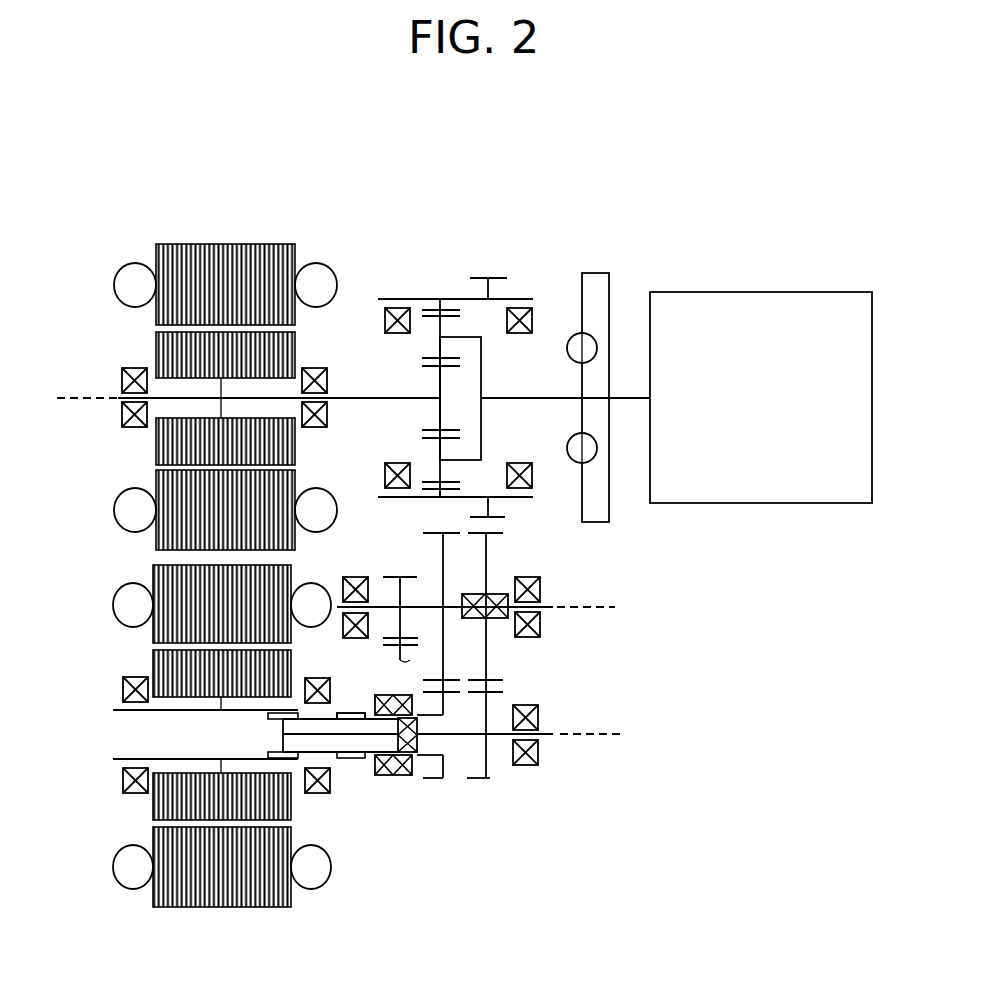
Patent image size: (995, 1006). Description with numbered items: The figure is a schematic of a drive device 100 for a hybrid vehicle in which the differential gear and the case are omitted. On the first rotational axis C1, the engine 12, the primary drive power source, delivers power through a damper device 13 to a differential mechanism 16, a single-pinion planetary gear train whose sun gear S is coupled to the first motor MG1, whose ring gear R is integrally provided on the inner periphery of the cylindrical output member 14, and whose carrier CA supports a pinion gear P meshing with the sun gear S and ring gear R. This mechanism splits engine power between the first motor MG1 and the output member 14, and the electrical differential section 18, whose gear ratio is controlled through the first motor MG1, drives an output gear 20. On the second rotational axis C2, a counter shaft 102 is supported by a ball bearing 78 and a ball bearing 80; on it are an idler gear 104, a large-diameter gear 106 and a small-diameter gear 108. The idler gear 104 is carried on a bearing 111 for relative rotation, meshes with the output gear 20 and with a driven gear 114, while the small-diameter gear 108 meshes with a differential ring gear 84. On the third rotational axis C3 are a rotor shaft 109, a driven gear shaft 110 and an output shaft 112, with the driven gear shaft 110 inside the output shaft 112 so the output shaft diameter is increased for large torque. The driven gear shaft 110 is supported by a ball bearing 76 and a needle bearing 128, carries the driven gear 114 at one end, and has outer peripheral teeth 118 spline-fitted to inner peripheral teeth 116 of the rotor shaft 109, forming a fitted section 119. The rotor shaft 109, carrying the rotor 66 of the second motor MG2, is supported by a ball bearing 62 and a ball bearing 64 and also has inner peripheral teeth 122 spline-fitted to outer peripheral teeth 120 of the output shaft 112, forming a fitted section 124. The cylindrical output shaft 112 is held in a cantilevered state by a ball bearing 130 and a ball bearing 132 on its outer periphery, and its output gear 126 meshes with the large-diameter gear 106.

The drive device 100 is at (656, 180).
The engine 12 is at (745, 303).
The damper device 13 is at (610, 290).
The output member 14 is at (522, 297).
The differential mechanism 16 is at (428, 282).
The electrical differential section 18 is at (345, 250).
The output gear 20 is at (485, 278).
The ball bearing 62 is at (132, 793).
The ball bearing 64 is at (316, 678).
The rotor 66 is at (160, 807).
The ball bearing 76 is at (540, 715).
The ball bearing 78 is at (350, 577).
The ball bearing 80 is at (525, 577).
The differential ring gear 84 is at (386, 640).
The counter shaft 102 is at (448, 603).
The idler gear 104 is at (488, 660).
The large-diameter gear 106 is at (428, 533).
The small-diameter gear 108 is at (405, 577).
The rotor shaft 109 is at (180, 711).
The driven gear shaft 110 is at (452, 737).
The bearing 111 is at (485, 598).
The output shaft 112 is at (420, 756).
The driven gear 114 is at (490, 780).
The inner peripheral teeth 116 is at (278, 714).
The outer peripheral teeth 118 is at (283, 755).
The fitted section 119 is at (262, 752).
The outer peripheral teeth 120 is at (350, 712).
The inner peripheral teeth 122 is at (351, 716).
The fitted section 124 is at (353, 767).
The output gear 126 is at (437, 782).
The needle bearing 128 is at (418, 729).
The ball bearing 130 is at (385, 776).
The ball bearing 132 is at (402, 776).
The first rotational axis C1 is at (90, 400).
The second rotational axis C2 is at (580, 608).
The third rotational axis C3 is at (583, 737).
The first motor MG1 is at (233, 232).
The second motor MG2 is at (125, 650).
The sun gear S is at (425, 362).
The pinion gear P is at (425, 432).
The ring gear R is at (478, 488).
The carrier CA is at (452, 337).